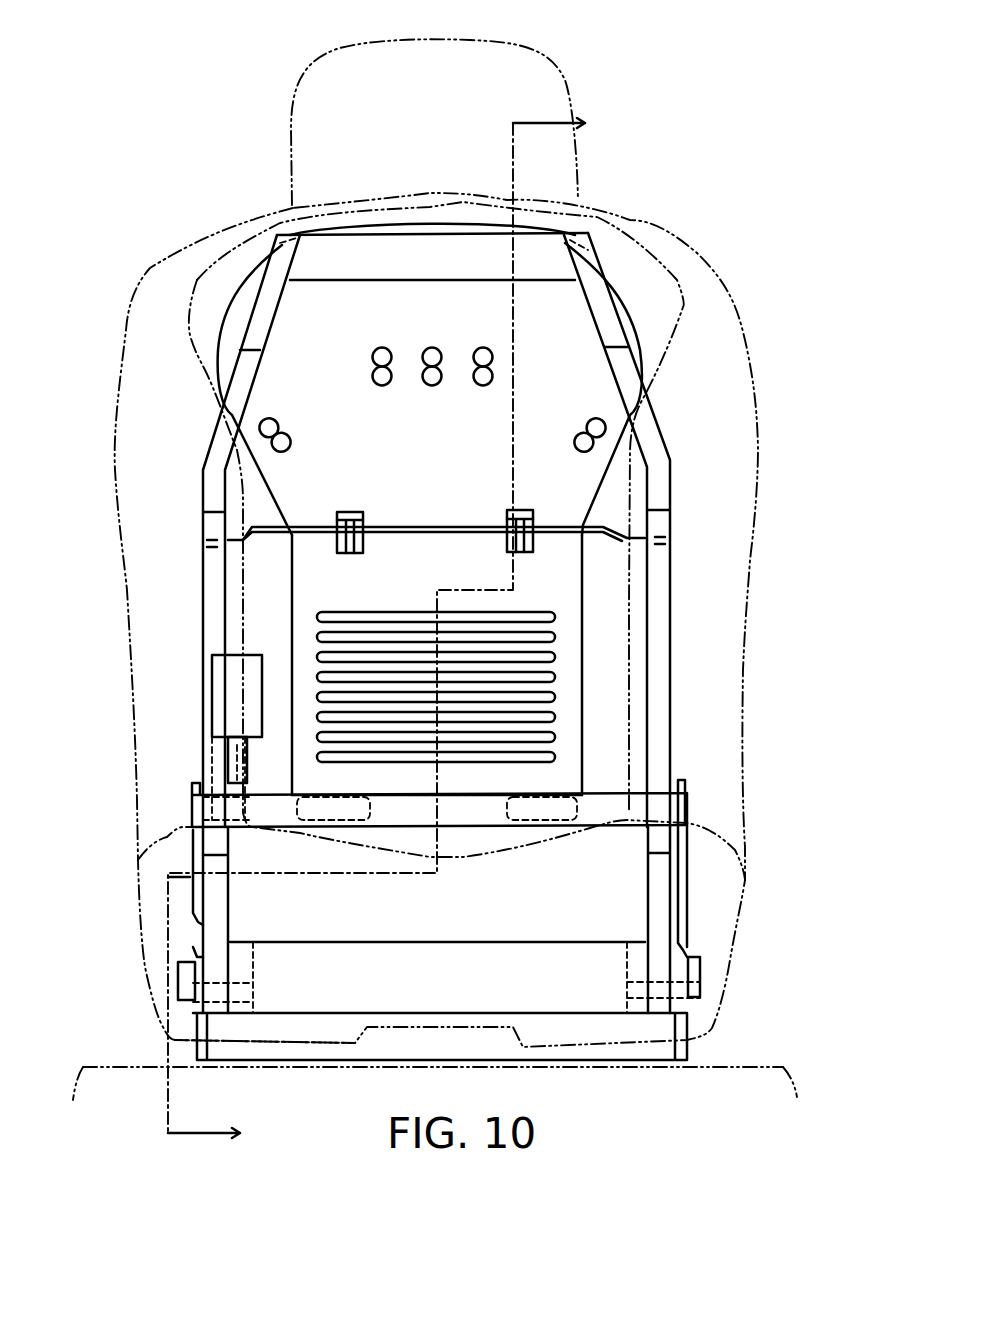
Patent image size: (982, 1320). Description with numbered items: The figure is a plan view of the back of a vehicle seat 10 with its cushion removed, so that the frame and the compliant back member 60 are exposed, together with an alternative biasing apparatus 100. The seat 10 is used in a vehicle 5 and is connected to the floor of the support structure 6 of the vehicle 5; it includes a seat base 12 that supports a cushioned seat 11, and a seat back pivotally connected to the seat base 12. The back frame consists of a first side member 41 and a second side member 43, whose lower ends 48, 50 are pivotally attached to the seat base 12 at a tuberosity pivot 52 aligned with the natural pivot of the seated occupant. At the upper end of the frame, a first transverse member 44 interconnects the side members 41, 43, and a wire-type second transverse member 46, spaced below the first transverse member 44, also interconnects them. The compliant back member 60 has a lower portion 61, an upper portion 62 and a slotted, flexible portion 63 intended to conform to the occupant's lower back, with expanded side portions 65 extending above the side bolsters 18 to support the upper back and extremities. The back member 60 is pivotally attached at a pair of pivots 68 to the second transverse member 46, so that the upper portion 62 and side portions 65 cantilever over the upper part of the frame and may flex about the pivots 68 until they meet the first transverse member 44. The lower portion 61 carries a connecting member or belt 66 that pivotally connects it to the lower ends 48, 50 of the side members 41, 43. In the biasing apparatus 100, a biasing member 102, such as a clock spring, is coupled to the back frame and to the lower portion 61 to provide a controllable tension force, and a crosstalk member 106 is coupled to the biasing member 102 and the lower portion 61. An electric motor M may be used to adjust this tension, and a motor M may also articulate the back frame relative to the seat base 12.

The vehicle seat 10 is at (174, 119).
The vehicle 5 is at (789, 1044).
The support structure 6 is at (107, 1061).
The cushioned seat 11 is at (398, 629).
The seat base 12 is at (710, 1017).
The side bolsters 18 is at (135, 502).
The first side member 41 is at (818, 650).
The second side member 43 is at (210, 573).
The first transverse member 44 is at (537, 255).
The second transverse member 46 is at (603, 527).
The lower end of first side member 48 is at (708, 915).
The lower end of second side member 50 is at (171, 936).
The tuberosity pivot 52 is at (178, 980).
The compliant back member 60 is at (456, 448).
The lower portion 61 is at (449, 847).
The upper portion 62 is at (302, 303).
The slotted, flexible portion 63 is at (342, 601).
The expanded side portions 65 is at (625, 312).
The connecting member or belt 66 is at (505, 803).
The pivots 68 is at (377, 548).
The biasing apparatus 100 is at (171, 782).
The biasing member 102 is at (197, 793).
The crosstalk member 106 is at (583, 830).
The electric drive motor M is at (235, 677).